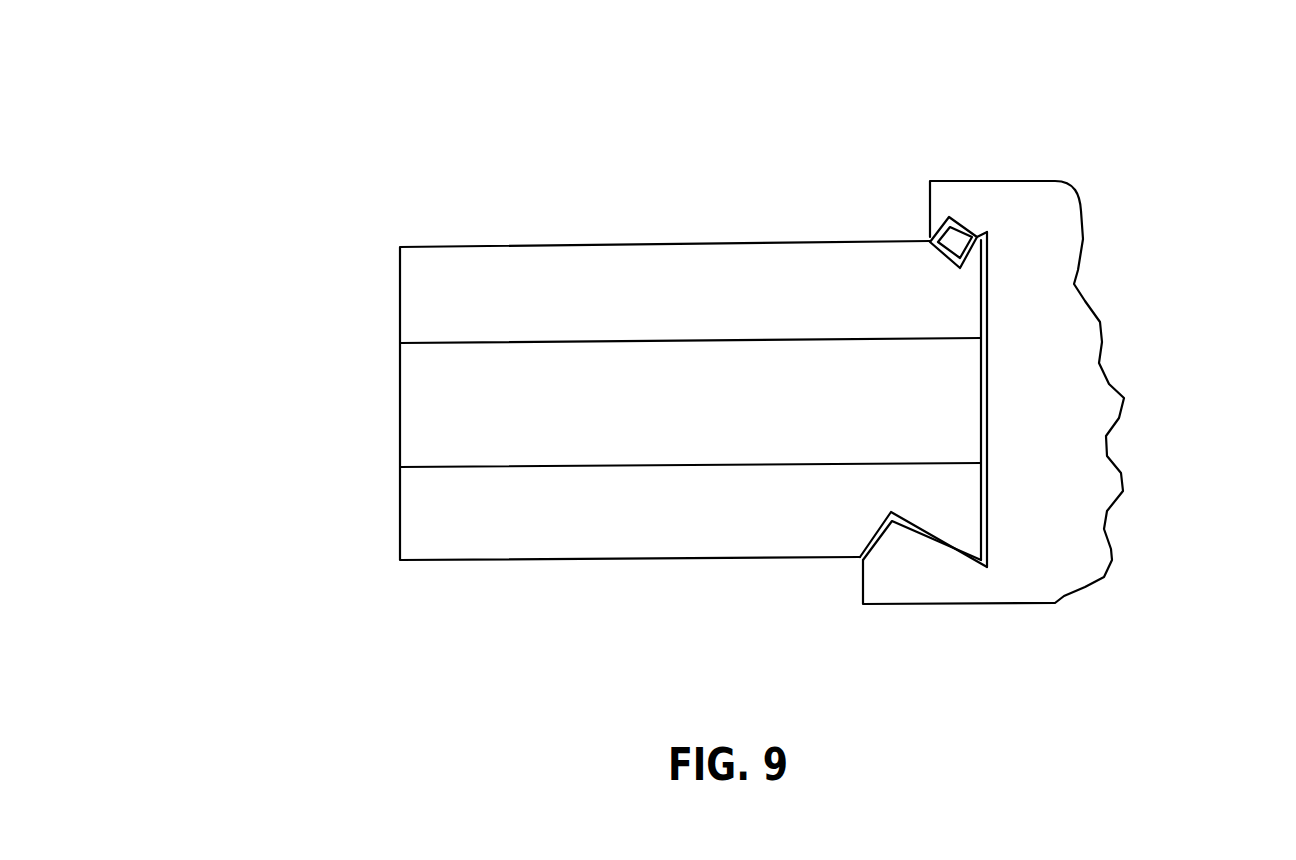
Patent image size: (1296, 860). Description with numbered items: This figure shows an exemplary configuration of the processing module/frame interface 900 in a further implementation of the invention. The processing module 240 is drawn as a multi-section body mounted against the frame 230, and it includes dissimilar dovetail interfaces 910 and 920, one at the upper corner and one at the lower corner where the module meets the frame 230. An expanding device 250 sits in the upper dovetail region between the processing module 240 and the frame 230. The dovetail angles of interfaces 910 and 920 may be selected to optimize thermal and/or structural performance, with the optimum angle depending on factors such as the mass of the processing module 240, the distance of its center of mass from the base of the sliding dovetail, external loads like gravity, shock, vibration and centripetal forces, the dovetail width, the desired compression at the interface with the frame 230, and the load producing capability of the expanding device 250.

The processing module/frame interface 900 is at (262, 58).
The processing module 240 is at (458, 275).
The frame 230 is at (1042, 345).
The dovetail interface 910 is at (940, 265).
The dovetail interface 920 is at (885, 505).
The expanding device 250 is at (968, 231).